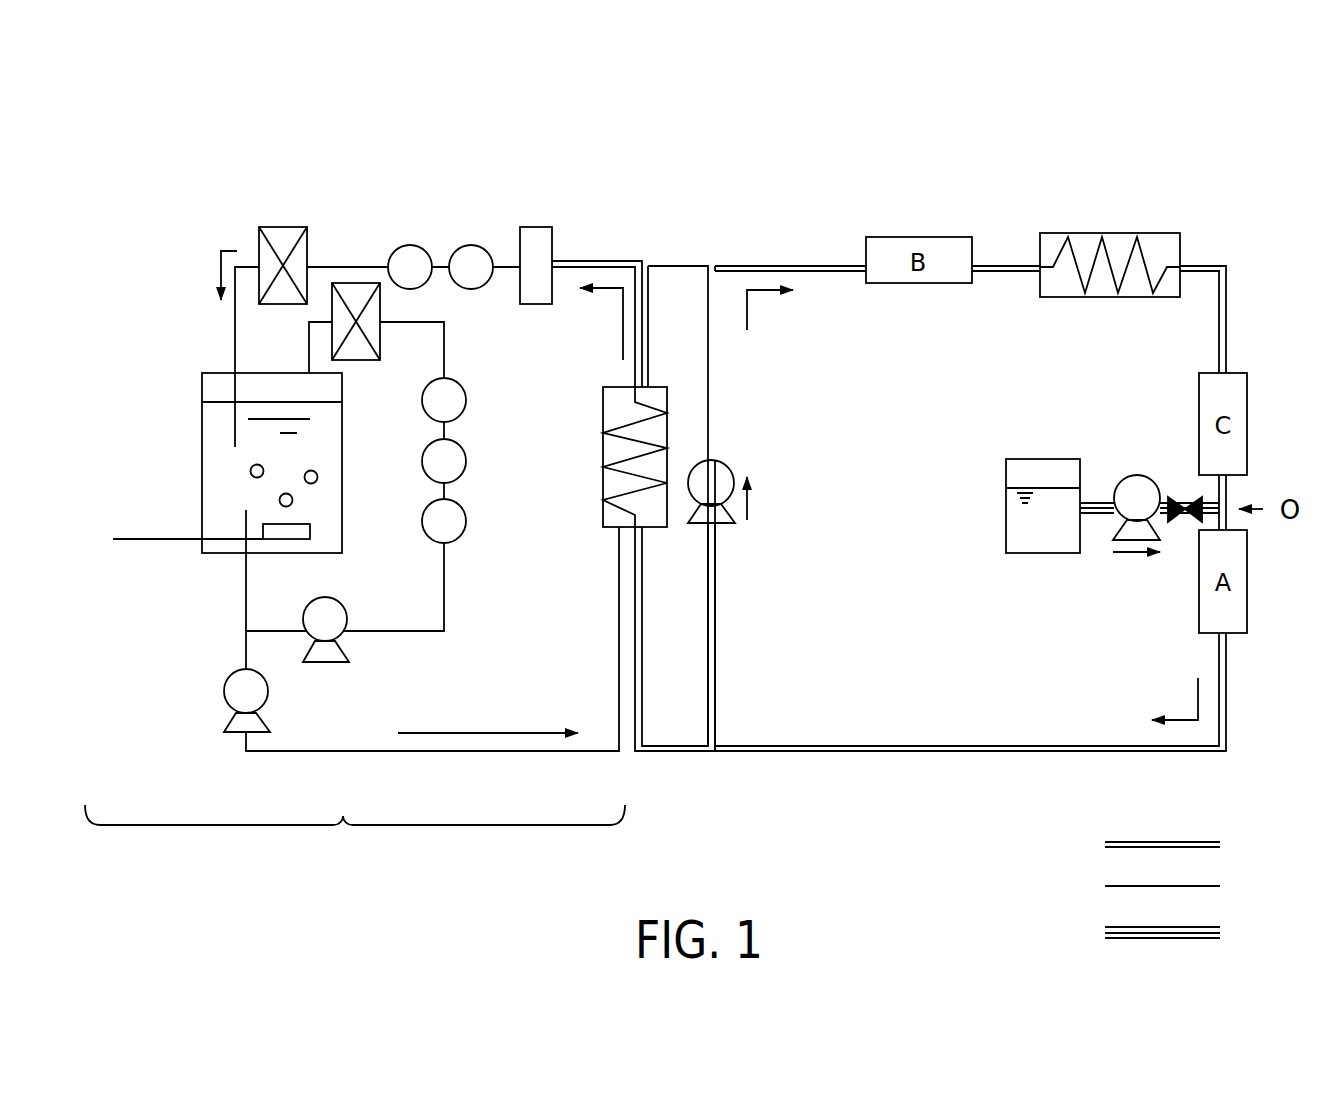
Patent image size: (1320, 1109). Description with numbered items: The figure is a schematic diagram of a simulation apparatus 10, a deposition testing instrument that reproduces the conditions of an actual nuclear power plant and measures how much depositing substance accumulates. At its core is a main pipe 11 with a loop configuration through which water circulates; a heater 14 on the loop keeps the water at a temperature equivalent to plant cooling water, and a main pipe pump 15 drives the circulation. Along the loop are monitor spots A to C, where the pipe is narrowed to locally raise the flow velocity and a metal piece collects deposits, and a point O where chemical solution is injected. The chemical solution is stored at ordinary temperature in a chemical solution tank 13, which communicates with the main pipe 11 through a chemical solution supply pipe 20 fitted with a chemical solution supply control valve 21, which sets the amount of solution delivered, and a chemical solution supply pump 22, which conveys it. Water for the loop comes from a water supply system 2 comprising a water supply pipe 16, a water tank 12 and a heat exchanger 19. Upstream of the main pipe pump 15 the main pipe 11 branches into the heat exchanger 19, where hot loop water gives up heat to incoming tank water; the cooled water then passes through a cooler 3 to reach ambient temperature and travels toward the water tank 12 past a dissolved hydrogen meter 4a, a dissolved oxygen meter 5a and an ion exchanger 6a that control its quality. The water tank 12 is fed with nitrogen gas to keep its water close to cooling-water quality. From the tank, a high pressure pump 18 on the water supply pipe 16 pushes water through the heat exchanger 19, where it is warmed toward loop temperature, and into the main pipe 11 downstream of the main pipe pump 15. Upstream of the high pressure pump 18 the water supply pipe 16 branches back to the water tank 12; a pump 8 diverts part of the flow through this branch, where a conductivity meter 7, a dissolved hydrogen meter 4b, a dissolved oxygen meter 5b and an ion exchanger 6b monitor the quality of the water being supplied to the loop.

The water supply system 2 is at (355, 834).
The cooler 3 is at (536, 227).
The dissolved hydrogen meter 4a is at (471, 245).
The dissolved hydrogen meter 4b is at (466, 461).
The dissolved oxygen meter 5a is at (408, 245).
The dissolved oxygen meter 5b is at (466, 400).
The ion exchanger 6a is at (283, 227).
The ion exchanger 6b is at (359, 361).
The conductivity meter 7 is at (466, 521).
The pump 8 is at (322, 657).
The simulation apparatus 10 is at (719, 186).
The main pipe 11 is at (1238, 292).
The water tank 12 is at (207, 440).
The chemical solution tank 13 is at (1015, 480).
The heater 14 is at (1120, 233).
The main pipe pump 15 is at (724, 527).
The water supply pipe 16 is at (413, 752).
The high pressure pump 18 is at (222, 684).
The heat exchanger 19 is at (603, 442).
The chemical solution supply pipe 20 is at (1097, 520).
The chemical solution supply control valve 21 is at (1178, 495).
The chemical solution supply pump 22 is at (1138, 475).